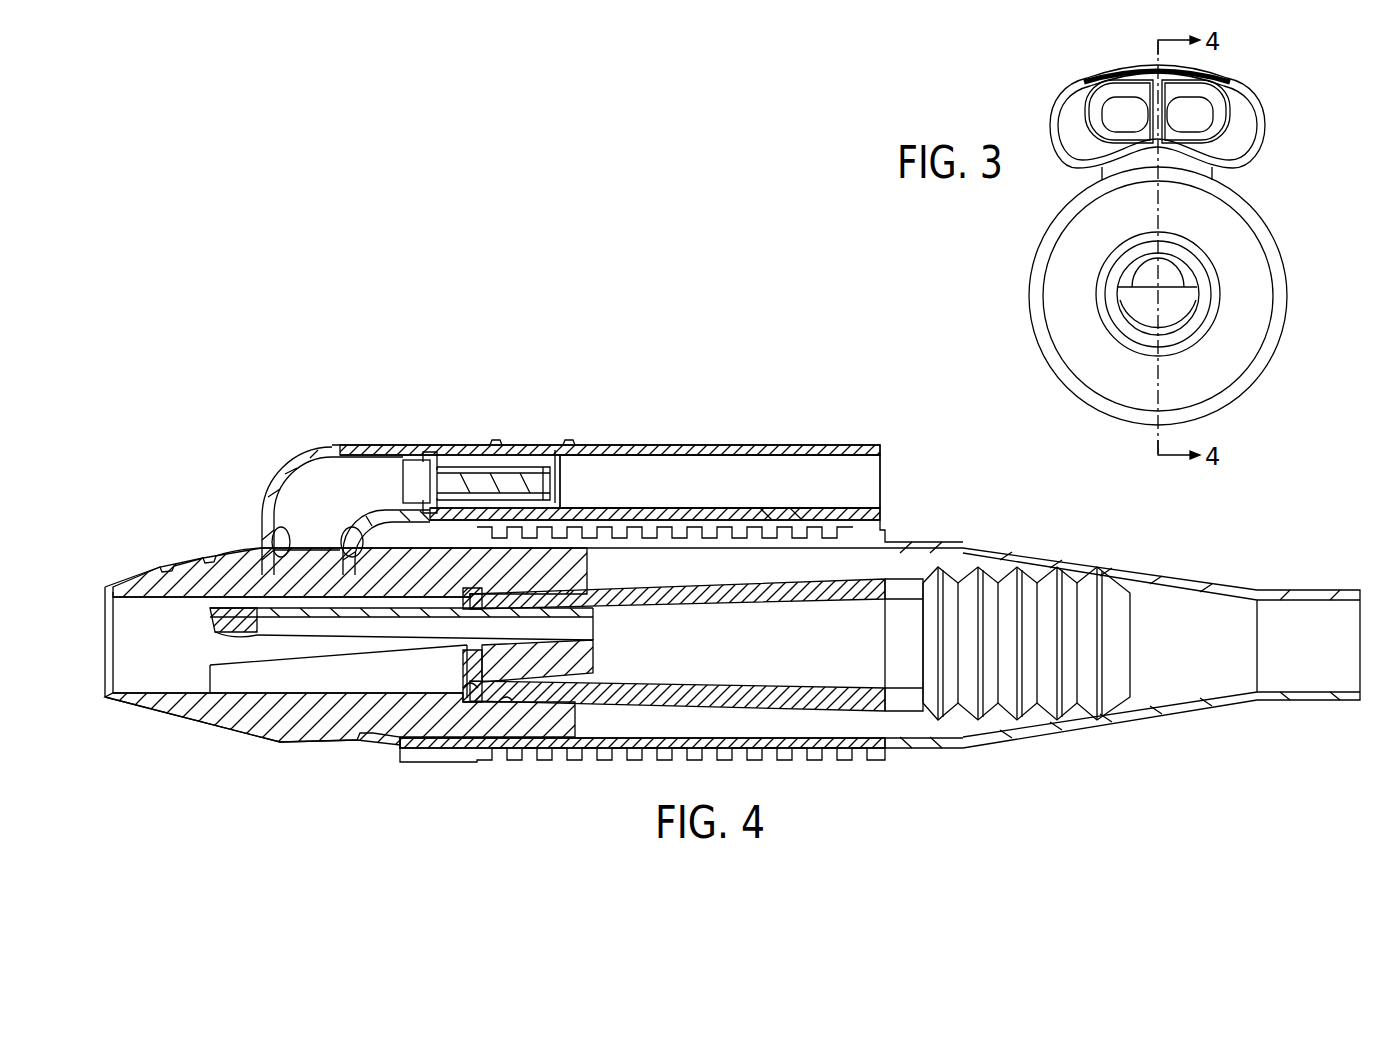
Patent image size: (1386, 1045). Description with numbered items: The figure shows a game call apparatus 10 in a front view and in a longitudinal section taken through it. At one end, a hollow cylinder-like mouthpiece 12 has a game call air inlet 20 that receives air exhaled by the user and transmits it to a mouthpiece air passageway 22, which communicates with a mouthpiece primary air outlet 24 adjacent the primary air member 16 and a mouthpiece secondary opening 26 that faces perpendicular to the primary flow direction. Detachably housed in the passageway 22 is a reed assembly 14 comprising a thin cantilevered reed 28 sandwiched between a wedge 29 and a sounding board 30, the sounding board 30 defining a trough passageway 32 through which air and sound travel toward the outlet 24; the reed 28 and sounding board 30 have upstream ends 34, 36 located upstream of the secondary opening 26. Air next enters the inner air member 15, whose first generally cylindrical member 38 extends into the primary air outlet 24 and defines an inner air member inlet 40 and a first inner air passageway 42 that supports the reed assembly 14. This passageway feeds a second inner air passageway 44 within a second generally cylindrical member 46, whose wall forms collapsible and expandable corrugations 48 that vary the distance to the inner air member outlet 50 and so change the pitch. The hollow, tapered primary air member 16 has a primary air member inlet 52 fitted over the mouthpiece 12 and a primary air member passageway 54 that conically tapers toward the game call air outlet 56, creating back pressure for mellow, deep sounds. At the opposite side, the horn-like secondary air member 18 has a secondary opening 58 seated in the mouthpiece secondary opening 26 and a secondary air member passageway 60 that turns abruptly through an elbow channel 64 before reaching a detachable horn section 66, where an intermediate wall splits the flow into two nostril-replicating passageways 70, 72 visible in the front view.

In FIG. 3, the game call apparatus 10 is at (1025, 125).
In FIG. 4, the game call apparatus 10 is at (462, 335).
In FIG. 4, the mouthpiece 12 is at (305, 745).
In FIG. 4, the reed assembly 14 is at (405, 690).
In FIG. 4, the inner air member 15 is at (842, 712).
In FIG. 3, the primary air member 16 is at (1030, 318).
In FIG. 4, the primary air member 16 is at (1138, 728).
In FIG. 3, the secondary air member 18 is at (1070, 160).
In FIG. 4, the secondary air member 18 is at (565, 442).
In FIG. 4, the game call air inlet 20 is at (108, 582).
In FIG. 4, the mouthpiece air passageway 22 is at (182, 680).
In FIG. 4, the mouthpiece primary air outlet 24 is at (582, 702).
In FIG. 4, the mouthpiece secondary opening 26 is at (275, 540).
In FIG. 4, the reed 28 is at (250, 695).
In FIG. 4, the wedge 29 is at (506, 702).
In FIG. 4, the sounding board 30 is at (372, 735).
In FIG. 4, the trough passageway 32 is at (345, 630).
In FIG. 4, the upstream end of the reed 34 is at (206, 718).
In FIG. 4, the upstream end of the sounding board 36 is at (210, 612).
In FIG. 4, the first generally cylindrical member 38 is at (672, 705).
In FIG. 4, the inner air member inlet 40 is at (455, 675).
In FIG. 4, the first inner air passageway 42 is at (705, 662).
In FIG. 4, the second inner air passageway 44 is at (1025, 698).
In FIG. 4, the second generally cylindrical member 46 is at (1040, 722).
In FIG. 4, the corrugations 48 is at (1030, 580).
In FIG. 4, the inner air member outlet 50 is at (1132, 607).
In FIG. 4, the primary air member inlet 52 is at (470, 568).
In FIG. 4, the primary air member passageway 54 is at (1203, 628).
In FIG. 4, the game call air outlet 56 is at (1358, 596).
In FIG. 4, the secondary opening 58 is at (366, 576).
In FIG. 4, the secondary air member passageway 60 is at (384, 468).
In FIG. 4, the elbow channel 64 is at (282, 470).
In FIG. 4, the horn section 66 is at (705, 442).
In FIG. 3, the nostril-replicating passageway 70 is at (1105, 115).
In FIG. 3, the nostril-replicating passageway 72 is at (1220, 117).
In FIG. 4, the nostril-replicating passageway 72 is at (778, 475).